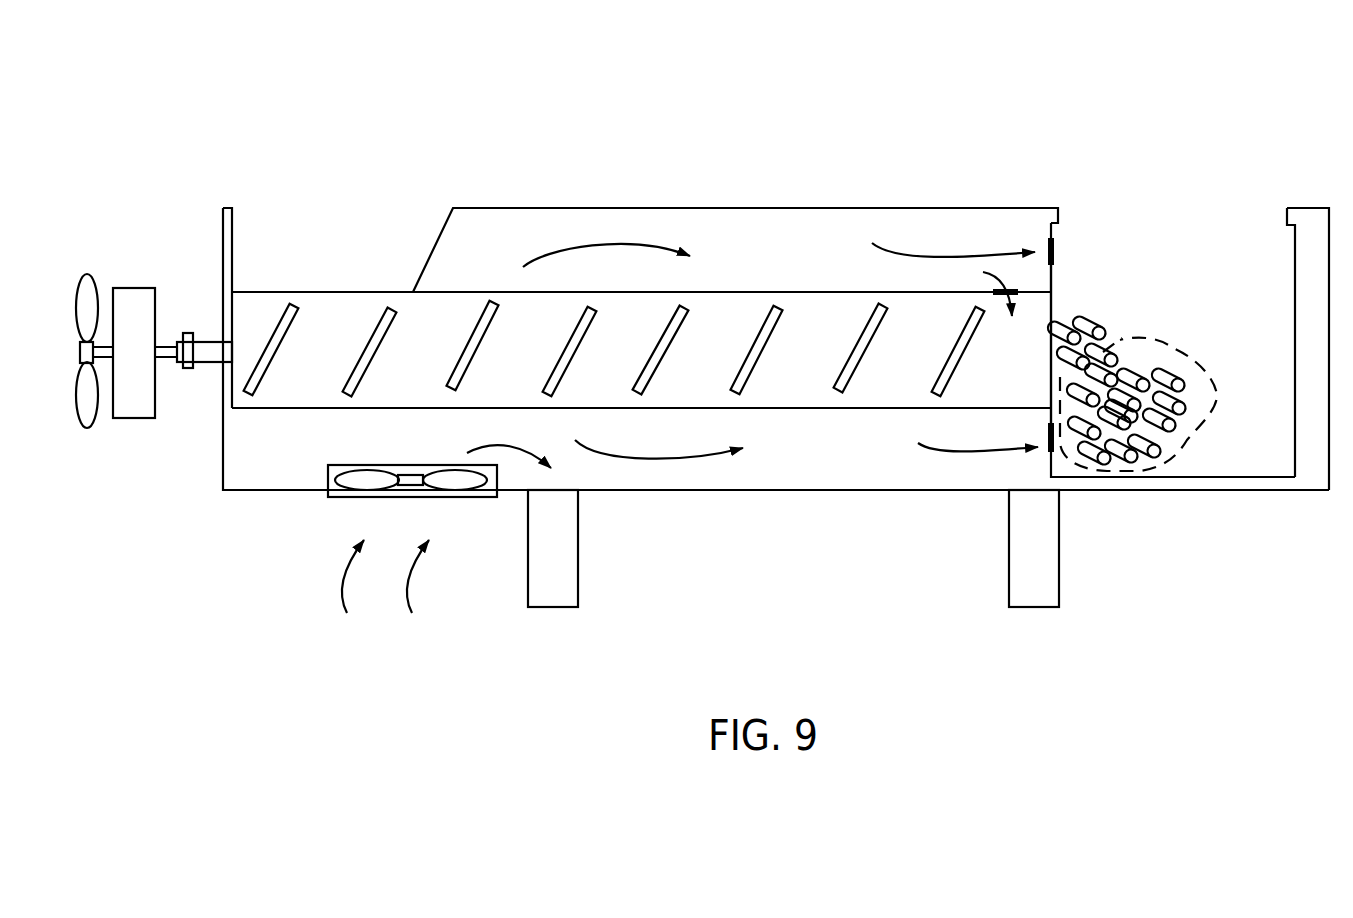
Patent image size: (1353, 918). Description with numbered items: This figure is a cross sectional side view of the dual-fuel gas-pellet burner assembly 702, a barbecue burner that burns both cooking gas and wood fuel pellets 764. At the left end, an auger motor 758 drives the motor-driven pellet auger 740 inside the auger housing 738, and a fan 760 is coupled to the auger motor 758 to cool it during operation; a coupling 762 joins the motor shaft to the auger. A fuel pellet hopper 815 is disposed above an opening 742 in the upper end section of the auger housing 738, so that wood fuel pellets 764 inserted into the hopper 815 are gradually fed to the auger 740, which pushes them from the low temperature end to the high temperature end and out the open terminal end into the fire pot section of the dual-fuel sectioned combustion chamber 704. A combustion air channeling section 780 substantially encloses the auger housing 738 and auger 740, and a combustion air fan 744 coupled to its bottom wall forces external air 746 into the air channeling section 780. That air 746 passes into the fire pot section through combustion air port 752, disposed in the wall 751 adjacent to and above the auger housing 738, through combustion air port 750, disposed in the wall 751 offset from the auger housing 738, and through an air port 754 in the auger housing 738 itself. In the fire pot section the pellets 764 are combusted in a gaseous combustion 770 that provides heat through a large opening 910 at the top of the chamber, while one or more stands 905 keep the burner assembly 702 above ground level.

The dual-fuel gas-pellet burner assembly 702 is at (251, 126).
The dual-fuel sectioned combustion chamber 704 is at (1289, 193).
The auger housing 738 is at (695, 292).
The motor-driven pellet auger 740 is at (766, 322).
The opening 742 is at (365, 292).
The combustion air fan 744 is at (328, 480).
The air 746 is at (648, 250).
The combustion air port 750 is at (1047, 437).
The wall 751 is at (1052, 283).
The combustion air port 752 is at (1049, 243).
The air port 754 is at (983, 277).
The auger motor 758 is at (145, 418).
The fan 760 is at (87, 275).
The coupling 762 is at (192, 333).
The wood fuel pellets 764 is at (1165, 373).
The gaseous combustion 770 is at (1215, 392).
The combustion air channeling section 780 is at (763, 238).
The fuel pellet hopper 815 is at (447, 223).
The stands 905 is at (578, 528).
The large opening 910 is at (1101, 180).